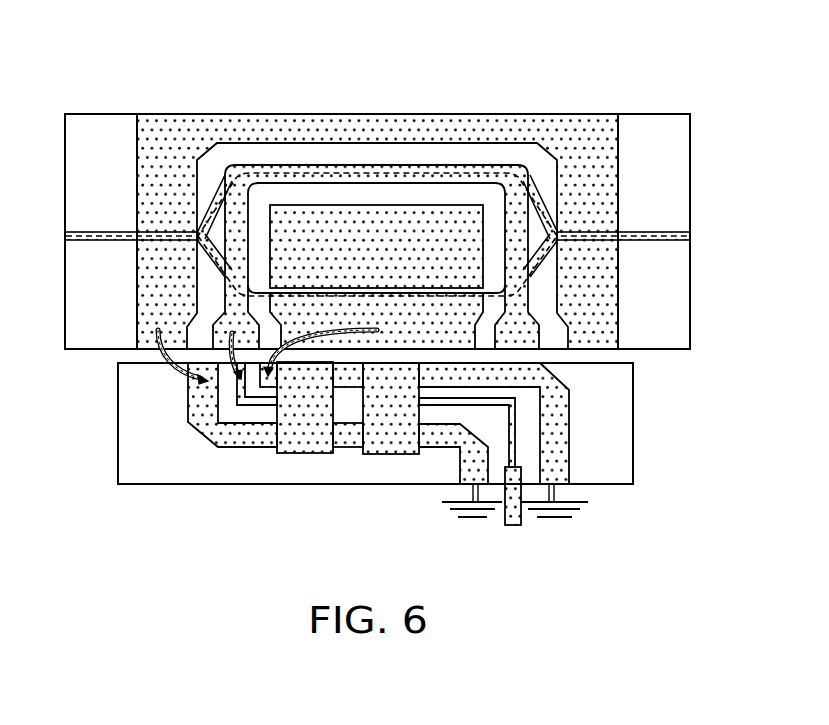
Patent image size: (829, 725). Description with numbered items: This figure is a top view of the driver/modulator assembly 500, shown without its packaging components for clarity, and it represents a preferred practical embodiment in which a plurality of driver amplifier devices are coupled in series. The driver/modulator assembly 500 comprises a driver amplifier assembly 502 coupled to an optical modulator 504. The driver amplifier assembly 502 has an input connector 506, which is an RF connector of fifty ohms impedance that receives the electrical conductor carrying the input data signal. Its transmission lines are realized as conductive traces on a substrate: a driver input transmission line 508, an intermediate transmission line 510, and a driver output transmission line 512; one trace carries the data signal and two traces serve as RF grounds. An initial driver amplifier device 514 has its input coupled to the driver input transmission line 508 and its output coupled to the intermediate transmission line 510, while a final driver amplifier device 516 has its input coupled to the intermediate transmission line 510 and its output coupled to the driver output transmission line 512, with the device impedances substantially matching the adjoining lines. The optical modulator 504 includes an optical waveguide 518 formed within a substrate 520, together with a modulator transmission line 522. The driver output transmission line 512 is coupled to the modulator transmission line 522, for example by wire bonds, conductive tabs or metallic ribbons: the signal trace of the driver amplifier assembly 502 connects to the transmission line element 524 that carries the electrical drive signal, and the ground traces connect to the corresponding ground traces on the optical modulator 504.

The driver/modulator assembly 500 is at (465, 28).
The driver amplifier assembly 502 is at (150, 484).
The optical modulator 504 is at (104, 113).
The input connector 506 is at (515, 523).
The driver input transmission line 508 is at (436, 483).
The intermediate transmission line 510 is at (348, 483).
The driver output transmission line 512 is at (228, 483).
The initial driver amplifier device 514 is at (393, 450).
The final driver amplifier device 516 is at (292, 455).
The optical waveguide 518 is at (105, 232).
The substrate 520 is at (92, 342).
The modulator transmission line 522 is at (397, 233).
The transmission line element 524 is at (260, 193).